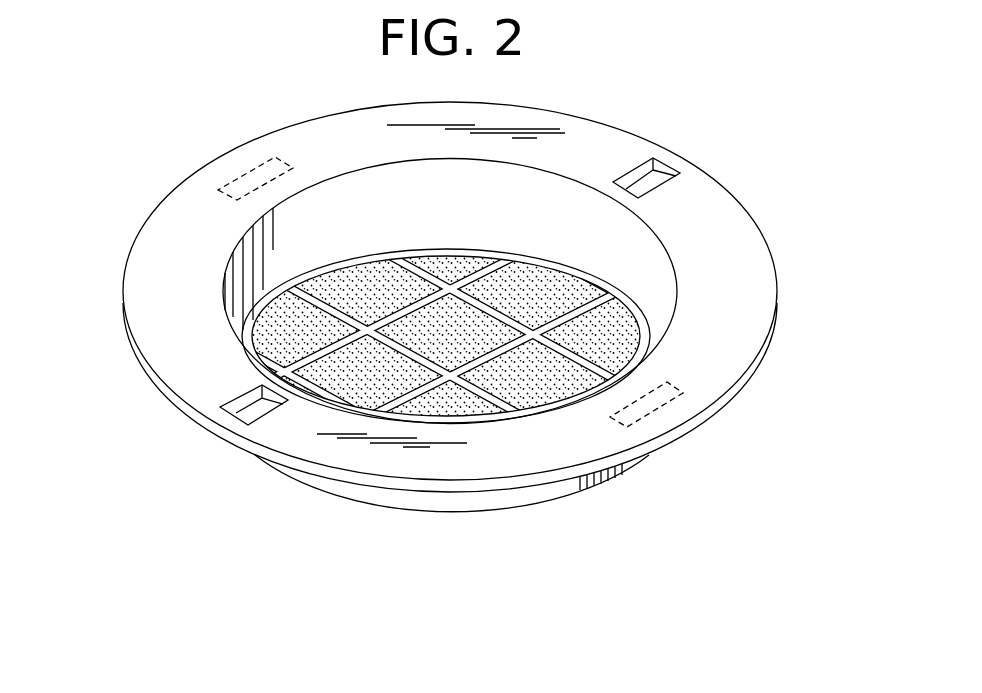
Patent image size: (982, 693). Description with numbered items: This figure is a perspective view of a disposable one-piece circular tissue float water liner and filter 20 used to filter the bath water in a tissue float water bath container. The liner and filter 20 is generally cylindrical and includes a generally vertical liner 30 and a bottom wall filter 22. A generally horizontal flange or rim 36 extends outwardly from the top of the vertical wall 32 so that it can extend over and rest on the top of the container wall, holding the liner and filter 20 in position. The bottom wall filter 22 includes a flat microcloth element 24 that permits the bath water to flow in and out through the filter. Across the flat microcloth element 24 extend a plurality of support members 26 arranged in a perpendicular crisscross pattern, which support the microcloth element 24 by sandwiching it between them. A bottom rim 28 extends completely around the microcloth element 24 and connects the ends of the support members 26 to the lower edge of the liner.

The liner and filter 20 is at (194, 153).
The bottom wall filter 22 is at (667, 328).
The flat microcloth element 24 is at (613, 310).
The support members 26 is at (333, 312).
The bottom rim 28 is at (261, 315).
The liner 30 is at (673, 437).
The vertical wall 32 is at (523, 498).
The flange or rim 36 is at (717, 373).